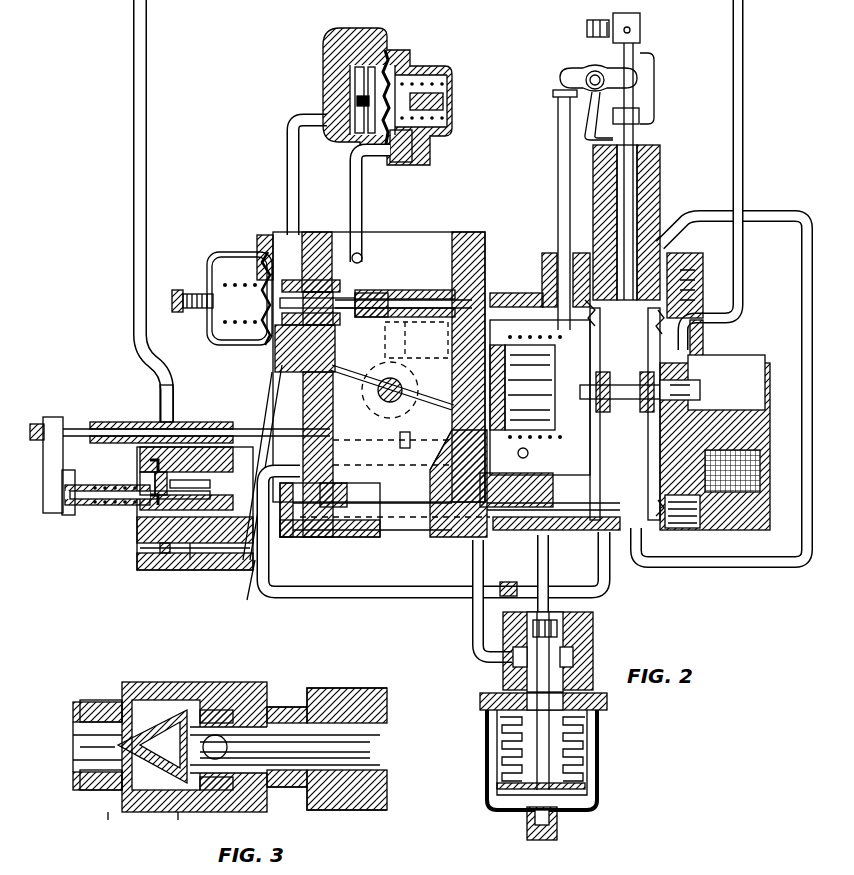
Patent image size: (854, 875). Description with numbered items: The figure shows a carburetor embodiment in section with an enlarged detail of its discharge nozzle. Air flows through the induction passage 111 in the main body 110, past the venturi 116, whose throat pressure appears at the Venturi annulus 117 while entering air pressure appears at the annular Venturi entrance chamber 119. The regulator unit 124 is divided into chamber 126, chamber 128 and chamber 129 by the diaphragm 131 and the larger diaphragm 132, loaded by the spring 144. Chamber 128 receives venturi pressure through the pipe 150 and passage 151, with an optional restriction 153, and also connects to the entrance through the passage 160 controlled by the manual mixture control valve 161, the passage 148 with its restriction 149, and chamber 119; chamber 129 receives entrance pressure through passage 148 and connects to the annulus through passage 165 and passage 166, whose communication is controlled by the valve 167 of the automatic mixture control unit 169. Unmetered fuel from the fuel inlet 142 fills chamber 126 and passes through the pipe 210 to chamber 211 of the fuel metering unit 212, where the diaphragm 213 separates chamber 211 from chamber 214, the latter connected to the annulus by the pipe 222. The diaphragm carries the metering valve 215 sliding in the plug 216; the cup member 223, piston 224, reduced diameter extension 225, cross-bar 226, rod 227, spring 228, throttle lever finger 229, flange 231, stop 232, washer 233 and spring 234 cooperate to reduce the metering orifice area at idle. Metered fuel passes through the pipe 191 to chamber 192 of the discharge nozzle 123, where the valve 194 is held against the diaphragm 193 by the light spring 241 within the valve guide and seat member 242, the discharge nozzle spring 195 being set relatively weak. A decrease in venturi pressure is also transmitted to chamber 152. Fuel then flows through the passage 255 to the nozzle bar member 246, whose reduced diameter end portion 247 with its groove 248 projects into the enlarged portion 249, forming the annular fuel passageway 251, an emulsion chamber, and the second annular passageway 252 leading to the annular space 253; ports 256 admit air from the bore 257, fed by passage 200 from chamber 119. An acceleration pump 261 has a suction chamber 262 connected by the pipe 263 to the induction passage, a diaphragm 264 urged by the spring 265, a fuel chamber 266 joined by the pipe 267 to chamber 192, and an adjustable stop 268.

In FIG. 2, the main body 110 is at (445, 398).
In FIG. 2, the induction passage 111 is at (410, 262).
In FIG. 2, the venturi 116 is at (345, 491).
In FIG. 2, the Venturi annulus 117 is at (318, 530).
In FIG. 2, the annular Venturi entrance chamber 119 is at (432, 535).
In FIG. 2, the discharge nozzle 123 is at (215, 258).
In FIG. 2, the regulator unit 124 is at (775, 349).
In FIG. 2, the chamber 126 is at (662, 438).
In FIG. 2, the chamber 128 is at (640, 528).
In FIG. 2, the chamber 129 is at (497, 318).
In FIG. 2, the diaphragm 131 is at (650, 335).
In FIG. 2, the diaphragm 132 is at (600, 314).
In FIG. 2, the fuel inlet 142 is at (700, 540).
In FIG. 2, the spring 144 is at (515, 355).
In FIG. 2, the passage 148 is at (562, 530).
In FIG. 2, the restriction 149 is at (480, 540).
In FIG. 2, the pipe 150 is at (430, 598).
In FIG. 2, the passage 151 is at (333, 466).
In FIG. 2, the chamber 152 is at (205, 337).
In FIG. 2, the restriction 153 is at (520, 590).
In FIG. 2, the passage 160 is at (763, 213).
In FIG. 2, the manual mixture control valve 161 is at (658, 226).
In FIG. 2, the passage 165 is at (472, 645).
In FIG. 2, the passage 166 is at (560, 600).
In FIG. 2, the valve 167 is at (505, 680).
In FIG. 2, the automatic mixture control unit 169 is at (661, 746).
In FIG. 2, the pipe 191 is at (272, 400).
In FIG. 2, the chamber 192 is at (283, 236).
In FIG. 2, the diaphragm 193 is at (260, 346).
In FIG. 2, the valve 194 is at (330, 300).
In FIG. 2, the discharge nozzle spring 195 is at (235, 262).
In FIG. 2, the passage 200 is at (520, 448).
In FIG. 2, the pipe 210 is at (740, 138).
In FIG. 2, the chamber 211 is at (165, 558).
In FIG. 2, the fuel metering unit 212 is at (150, 565).
In FIG. 2, the diaphragm 213 is at (155, 535).
In FIG. 2, the chamber 214 is at (150, 520).
In FIG. 2, the metering valve 215 is at (190, 558).
In FIG. 3, the metering valve 215 is at (94, 843).
In FIG. 2, the plug 216 is at (215, 555).
In FIG. 3, the plug 216 is at (205, 872).
In FIG. 2, the pipe 222 is at (252, 562).
In FIG. 2, the cup member 223 is at (92, 483).
In FIG. 2, the piston 224 is at (140, 480).
In FIG. 2, the reduced diameter extension 225 is at (80, 512).
In FIG. 2, the cross-bar 226 is at (58, 420).
In FIG. 2, the rod 227 is at (137, 428).
In FIG. 2, the spring 228 is at (70, 424).
In FIG. 2, the throttle lever finger 229 is at (388, 455).
In FIG. 2, the flange 231 is at (410, 440).
In FIG. 2, the stop 232 is at (230, 415).
In FIG. 2, the washer 233 is at (150, 512).
In FIG. 2, the spring 234 is at (95, 515).
In FIG. 2, the light spring 241 is at (322, 240).
In FIG. 2, the valve guide and seat member 242 is at (348, 325).
In FIG. 2, the member 246 is at (400, 302).
In FIG. 3, the member 246 is at (365, 700).
In FIG. 3, the reduced diameter end portion 247 is at (245, 710).
In FIG. 3, the groove 248 is at (210, 705).
In FIG. 3, the enlarged portion 249 is at (152, 692).
In FIG. 3, the annular fuel passageway 251 is at (90, 706).
In FIG. 3, the second annular passageway 252 is at (290, 700).
In FIG. 3, the annular space 253 is at (305, 700).
In FIG. 2, the passage 255 is at (348, 308).
In FIG. 3, the passage 255 is at (95, 760).
In FIG. 3, the ports 256 is at (222, 735).
In FIG. 3, the bore 257 is at (372, 748).
In FIG. 2, the acceleration pump 261 is at (478, 49).
In FIG. 2, the suction chamber 262 is at (430, 140).
In FIG. 2, the pipe 263 is at (364, 197).
In FIG. 2, the diaphragm 264 is at (392, 78).
In FIG. 2, the spring 265 is at (450, 98).
In FIG. 2, the fuel chamber 266 is at (355, 80).
In FIG. 2, the pipe 267 is at (287, 156).
In FIG. 2, the adjustable stop 268 is at (357, 116).